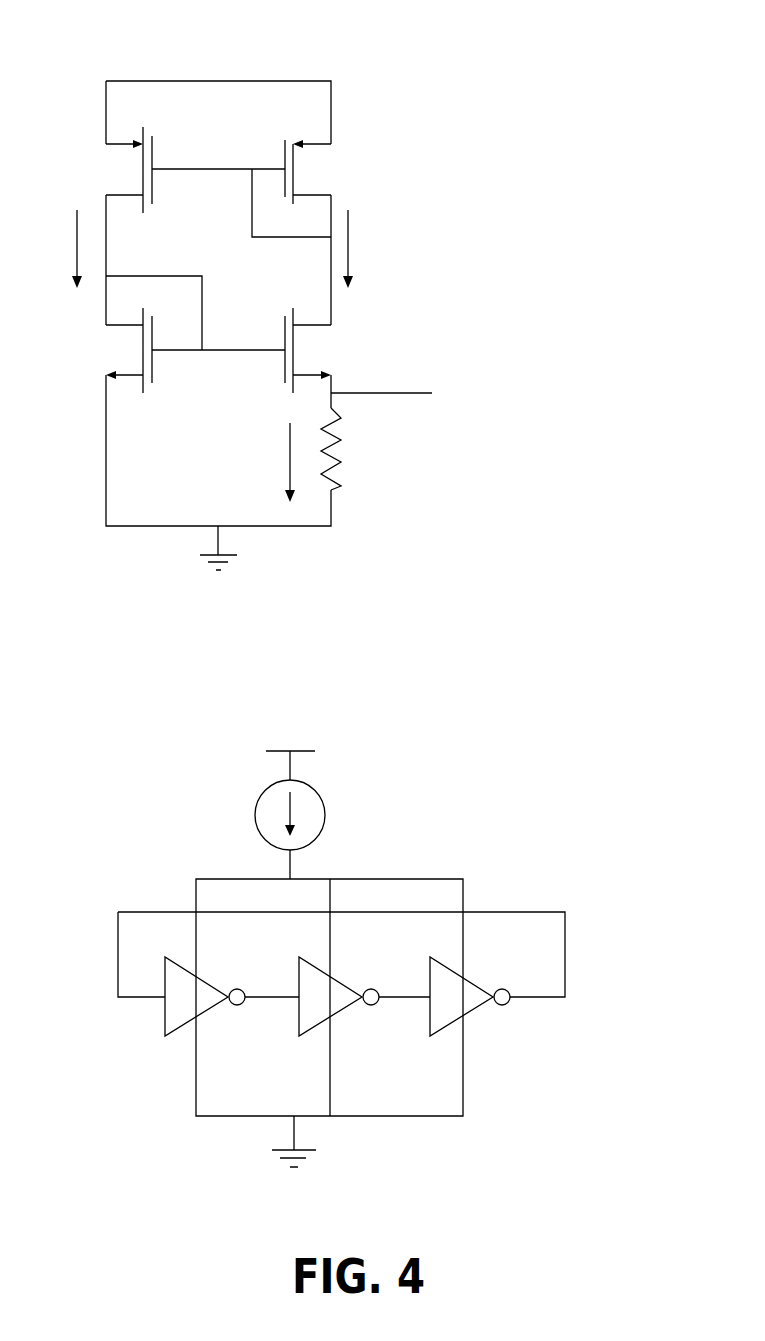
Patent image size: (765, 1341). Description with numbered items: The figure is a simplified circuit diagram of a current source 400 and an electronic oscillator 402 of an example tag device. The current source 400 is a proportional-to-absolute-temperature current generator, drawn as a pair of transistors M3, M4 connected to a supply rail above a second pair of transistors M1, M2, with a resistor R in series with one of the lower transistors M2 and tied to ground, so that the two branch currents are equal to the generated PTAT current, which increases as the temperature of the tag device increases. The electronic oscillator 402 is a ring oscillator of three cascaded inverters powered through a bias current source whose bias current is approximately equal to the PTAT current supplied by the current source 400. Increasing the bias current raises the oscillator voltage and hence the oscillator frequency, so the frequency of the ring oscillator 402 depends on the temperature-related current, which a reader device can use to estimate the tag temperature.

The current source 400 is at (614, 82).
The electronic oscillator 402 is at (628, 712).
The NMOS transistor M1 is at (166, 350).
The NMOS transistor M2 is at (329, 358).
The PMOS transistor M3 is at (166, 170).
The PMOS transistor M4 is at (313, 188).
The resistor R is at (344, 449).